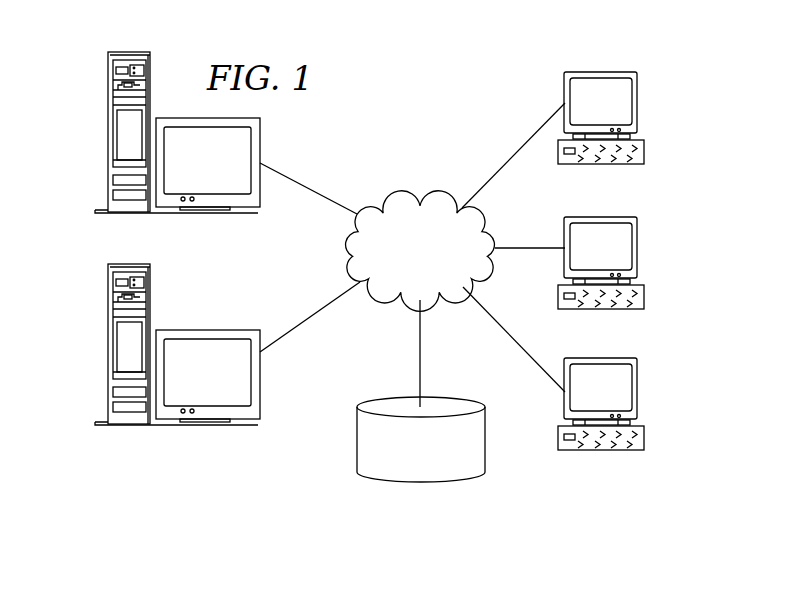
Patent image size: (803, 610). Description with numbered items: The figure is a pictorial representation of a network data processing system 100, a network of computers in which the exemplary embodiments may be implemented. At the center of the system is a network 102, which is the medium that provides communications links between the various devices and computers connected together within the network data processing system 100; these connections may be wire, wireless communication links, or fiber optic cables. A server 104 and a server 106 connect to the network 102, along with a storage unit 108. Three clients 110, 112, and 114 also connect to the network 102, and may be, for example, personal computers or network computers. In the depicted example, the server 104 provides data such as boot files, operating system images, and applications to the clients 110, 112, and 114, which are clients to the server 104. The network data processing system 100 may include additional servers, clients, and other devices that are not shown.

The network data processing system 100 is at (470, 86).
The network 102 is at (393, 198).
The server 104 is at (108, 137).
The server 106 is at (108, 349).
The storage unit 108 is at (402, 483).
The client 110 is at (638, 103).
The client 112 is at (638, 248).
The client 114 is at (638, 388).